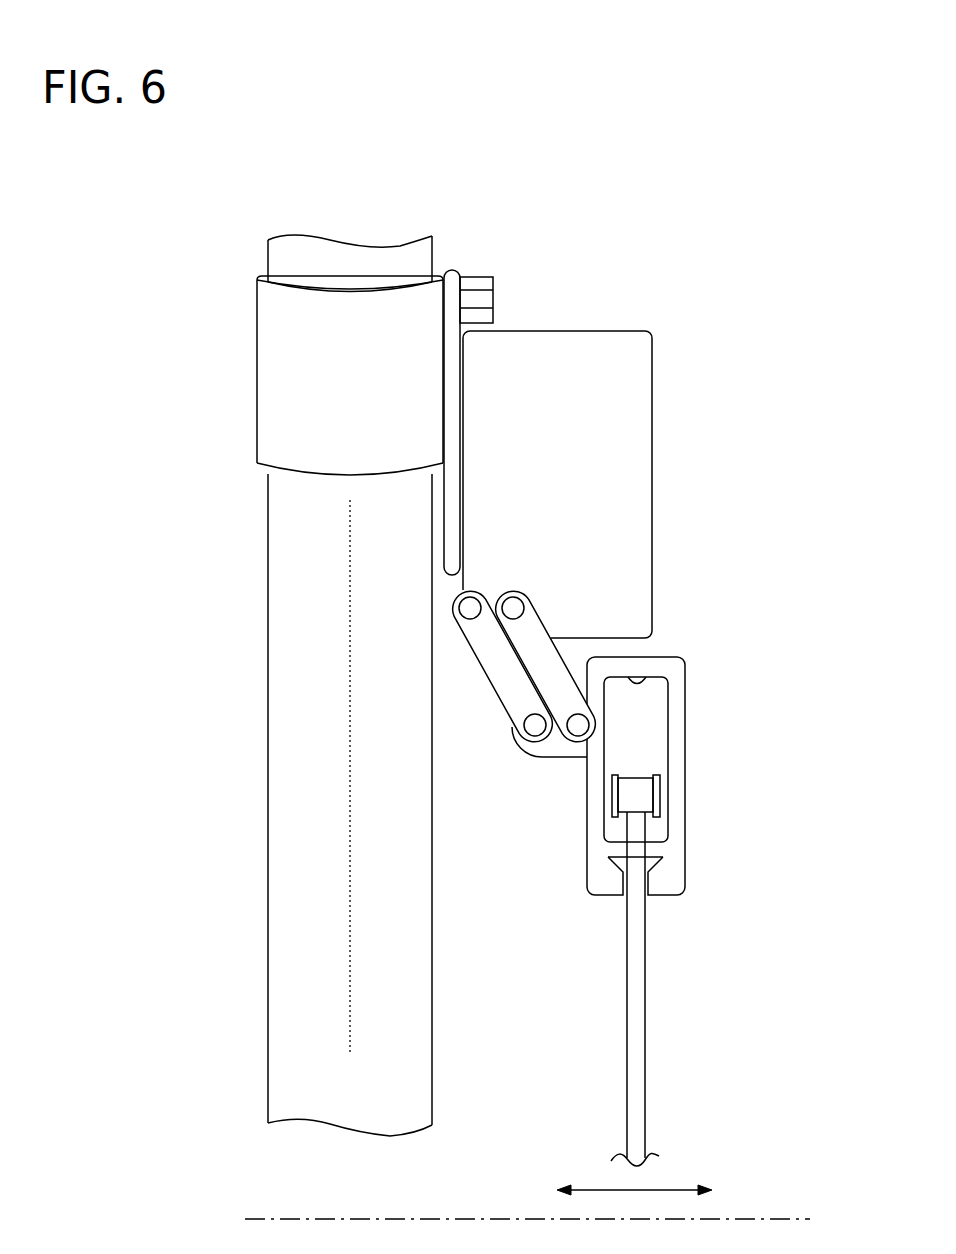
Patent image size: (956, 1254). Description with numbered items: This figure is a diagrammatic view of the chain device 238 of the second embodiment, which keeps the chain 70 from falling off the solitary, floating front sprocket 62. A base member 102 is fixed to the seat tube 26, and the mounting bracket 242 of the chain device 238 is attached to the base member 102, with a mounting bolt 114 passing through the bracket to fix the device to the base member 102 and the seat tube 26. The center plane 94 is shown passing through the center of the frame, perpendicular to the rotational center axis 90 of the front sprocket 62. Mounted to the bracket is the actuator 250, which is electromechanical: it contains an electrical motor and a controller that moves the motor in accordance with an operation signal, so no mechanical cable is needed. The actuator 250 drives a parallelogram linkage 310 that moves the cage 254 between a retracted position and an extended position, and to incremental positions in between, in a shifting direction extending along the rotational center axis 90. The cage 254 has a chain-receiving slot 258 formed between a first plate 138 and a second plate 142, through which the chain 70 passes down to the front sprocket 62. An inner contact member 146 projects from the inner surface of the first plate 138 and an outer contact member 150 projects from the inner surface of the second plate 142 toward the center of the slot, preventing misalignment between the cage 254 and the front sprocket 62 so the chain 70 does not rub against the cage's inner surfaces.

The seat tube 26 is at (290, 545).
The center plane 94 is at (348, 800).
The base member 102 is at (273, 345).
The mounting bracket 242 is at (450, 415).
The mounting bolt 114 is at (483, 283).
The chain device 238 is at (560, 396).
The actuator 250 is at (612, 483).
The parallelogram linkage 310 is at (538, 650).
The chain-receiving slot 258 is at (641, 683).
The cage 254 is at (677, 710).
The chain 70 is at (640, 788).
The second plate 142 is at (678, 797).
The first plate 138 is at (593, 795).
The inner contact member 146 is at (612, 882).
The outer contact member 150 is at (665, 884).
The front sprocket 62 is at (637, 1082).
The rotational center axis 90 is at (343, 1219).